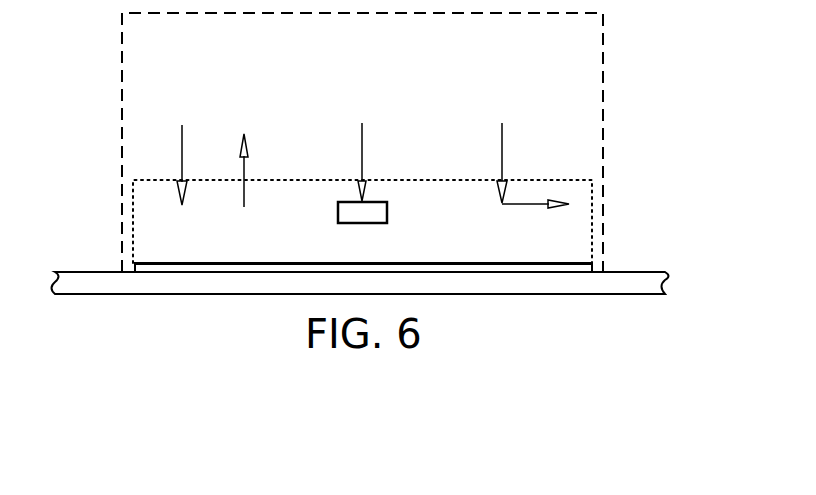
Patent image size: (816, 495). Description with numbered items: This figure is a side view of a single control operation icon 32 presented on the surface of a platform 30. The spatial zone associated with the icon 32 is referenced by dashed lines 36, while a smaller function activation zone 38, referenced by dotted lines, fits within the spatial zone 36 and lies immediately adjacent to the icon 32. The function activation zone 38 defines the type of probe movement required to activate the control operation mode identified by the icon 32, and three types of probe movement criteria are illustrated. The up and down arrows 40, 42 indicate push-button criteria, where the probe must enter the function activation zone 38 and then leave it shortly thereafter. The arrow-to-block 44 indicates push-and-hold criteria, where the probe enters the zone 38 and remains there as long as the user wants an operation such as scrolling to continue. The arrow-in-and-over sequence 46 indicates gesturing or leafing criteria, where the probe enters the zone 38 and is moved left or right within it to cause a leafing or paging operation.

The platform 30 is at (537, 285).
The icon 32 is at (208, 268).
The spatial zone 36 is at (603, 63).
The function activation zone 38 is at (592, 226).
The down arrow 40 is at (182, 152).
The up arrow 42 is at (244, 170).
The arrow-to-block 44 is at (362, 152).
The arrow-in-and-over sequence 46 is at (502, 152).